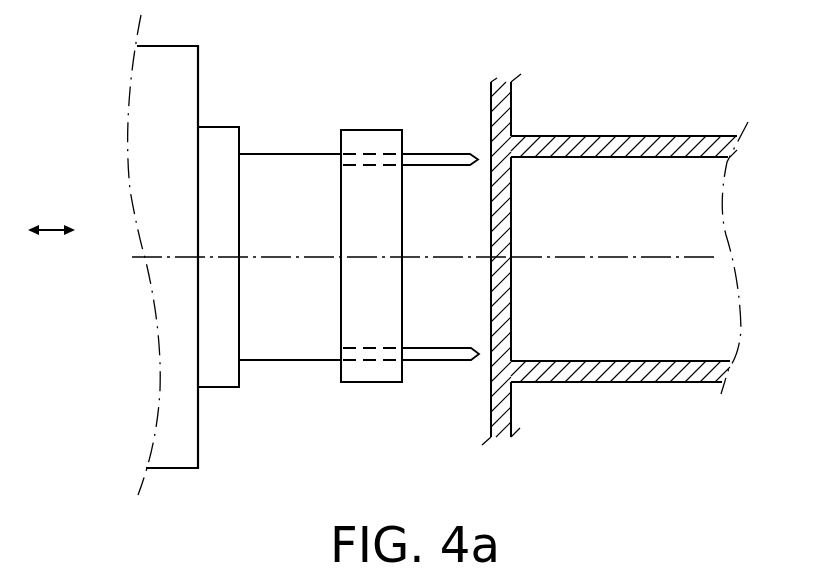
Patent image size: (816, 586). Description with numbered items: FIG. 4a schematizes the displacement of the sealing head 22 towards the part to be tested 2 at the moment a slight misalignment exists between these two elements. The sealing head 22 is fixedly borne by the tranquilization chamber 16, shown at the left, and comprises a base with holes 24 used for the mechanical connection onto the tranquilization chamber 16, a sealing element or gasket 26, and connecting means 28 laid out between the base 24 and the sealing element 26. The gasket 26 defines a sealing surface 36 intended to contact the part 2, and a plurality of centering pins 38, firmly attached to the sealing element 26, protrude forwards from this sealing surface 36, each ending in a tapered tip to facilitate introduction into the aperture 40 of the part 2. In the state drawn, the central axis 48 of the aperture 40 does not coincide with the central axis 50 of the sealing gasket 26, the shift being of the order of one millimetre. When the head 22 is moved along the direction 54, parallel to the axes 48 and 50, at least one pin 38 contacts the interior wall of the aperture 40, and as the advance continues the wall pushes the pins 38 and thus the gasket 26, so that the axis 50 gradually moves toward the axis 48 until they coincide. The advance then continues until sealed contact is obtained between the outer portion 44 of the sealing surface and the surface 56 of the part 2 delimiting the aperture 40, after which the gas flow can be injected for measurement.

The part to be tested 2 is at (703, 135).
The tranquilization chamber 16 is at (144, 70).
The sealing head 22 is at (275, 103).
The base with holes 24 is at (213, 135).
The sealing element/gasket 26 is at (381, 135).
The connecting means 28 is at (278, 160).
The sealing surface 36 is at (403, 322).
The centering pins 38 is at (445, 167).
The aperture 40 is at (503, 158).
The outer portion of the sealing surface 44 is at (403, 138).
The central axis of the aperture 48 is at (640, 258).
The central axis of the sealing gasket 50 is at (290, 257).
The direction of displacement 54 is at (53, 228).
The surface of the part delimiting the aperture 56 is at (490, 90).